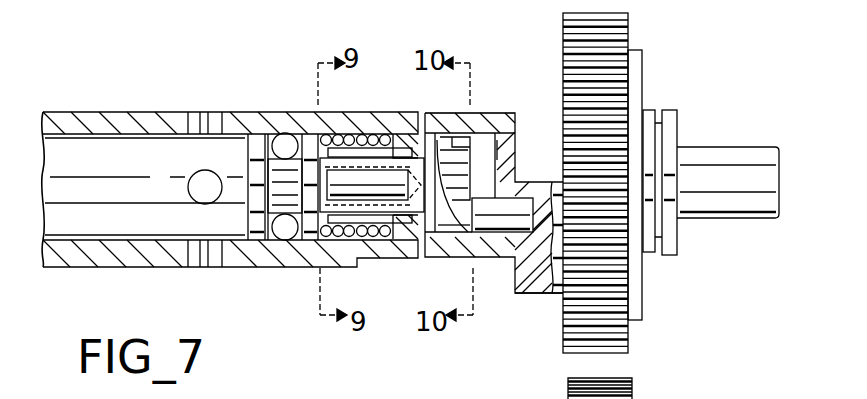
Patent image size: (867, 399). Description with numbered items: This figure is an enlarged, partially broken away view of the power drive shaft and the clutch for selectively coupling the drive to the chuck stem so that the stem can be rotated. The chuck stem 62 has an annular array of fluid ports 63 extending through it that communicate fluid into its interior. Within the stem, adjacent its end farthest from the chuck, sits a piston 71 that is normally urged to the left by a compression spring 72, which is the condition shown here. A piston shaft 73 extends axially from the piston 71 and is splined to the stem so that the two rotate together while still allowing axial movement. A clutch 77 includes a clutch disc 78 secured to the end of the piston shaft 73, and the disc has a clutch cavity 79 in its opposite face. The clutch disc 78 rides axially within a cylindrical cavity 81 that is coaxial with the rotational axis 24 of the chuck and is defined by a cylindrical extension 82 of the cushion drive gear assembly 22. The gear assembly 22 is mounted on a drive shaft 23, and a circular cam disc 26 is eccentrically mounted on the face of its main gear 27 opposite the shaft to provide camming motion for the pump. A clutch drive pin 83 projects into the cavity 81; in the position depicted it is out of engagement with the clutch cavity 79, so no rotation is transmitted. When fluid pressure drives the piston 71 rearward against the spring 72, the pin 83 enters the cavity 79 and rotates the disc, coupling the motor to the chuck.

The cushion drive gear assembly 22 is at (641, 63).
The drive shaft 23 is at (728, 157).
The rotational axis 24 is at (500, 260).
The cam disc 26 is at (538, 295).
The main gear 27 is at (627, 361).
The chuck stem 62 is at (127, 120).
The fluid ports 63 is at (203, 186).
The piston 71 is at (255, 143).
The compression spring 72 is at (362, 113).
The piston shaft 73 is at (362, 207).
The clutch 77 is at (520, 100).
The clutch disc 78 is at (438, 230).
The clutch cavity 79 is at (472, 143).
The cylindrical cavity 81 is at (492, 158).
The cylindrical extension 82 is at (451, 116).
The clutch drive pin 83 is at (490, 218).